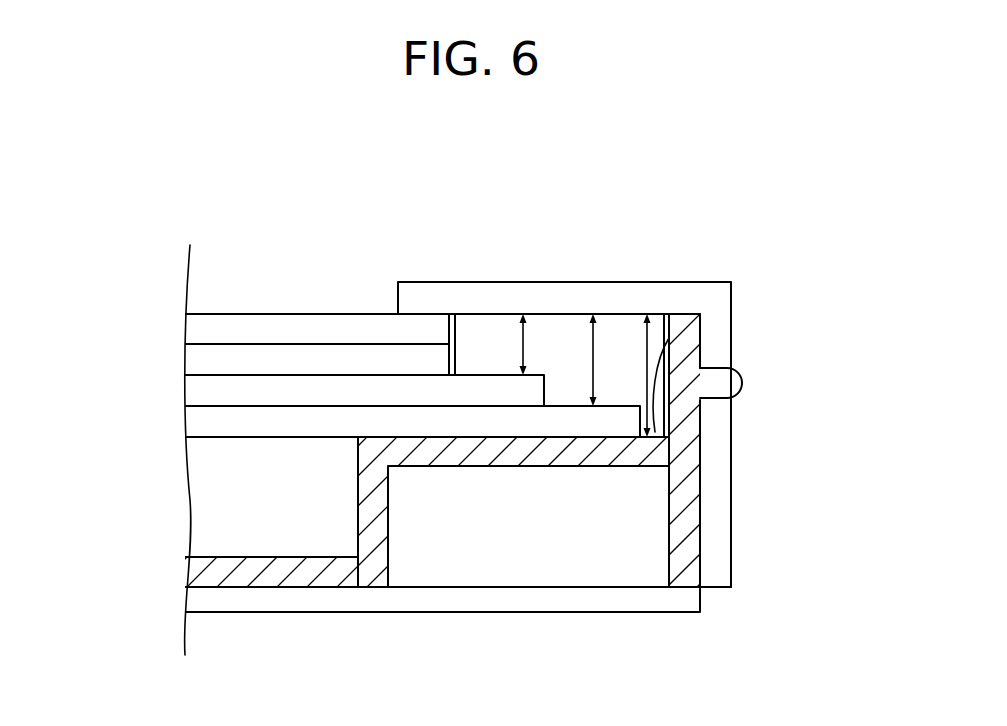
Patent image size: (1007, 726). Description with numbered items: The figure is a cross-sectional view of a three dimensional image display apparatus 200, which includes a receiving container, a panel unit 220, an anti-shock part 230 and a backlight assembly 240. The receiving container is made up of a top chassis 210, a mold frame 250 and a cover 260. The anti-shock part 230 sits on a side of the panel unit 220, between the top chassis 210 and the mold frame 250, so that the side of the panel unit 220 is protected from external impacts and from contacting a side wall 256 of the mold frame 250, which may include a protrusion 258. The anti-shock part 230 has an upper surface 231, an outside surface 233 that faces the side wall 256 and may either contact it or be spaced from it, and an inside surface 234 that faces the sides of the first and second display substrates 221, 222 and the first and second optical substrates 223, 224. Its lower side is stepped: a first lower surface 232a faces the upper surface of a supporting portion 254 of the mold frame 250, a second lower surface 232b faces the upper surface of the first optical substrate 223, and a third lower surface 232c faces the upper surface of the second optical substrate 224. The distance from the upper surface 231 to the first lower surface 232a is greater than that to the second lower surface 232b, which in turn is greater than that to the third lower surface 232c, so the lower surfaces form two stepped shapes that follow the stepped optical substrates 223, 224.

The three dimensional image display apparatus 200 is at (732, 631).
The top chassis 210 is at (717, 303).
The panel unit 220 is at (343, 375).
The first display substrate 221 is at (200, 360).
The second display substrate 222 is at (200, 328).
The first optical substrate 223 is at (371, 421).
The second optical substrate 224 is at (200, 392).
The anti-shock part 230 is at (613, 333).
The upper surface 231 is at (657, 314).
The first lower surface 232a is at (669, 338).
The second lower surface 232b is at (565, 405).
The third lower surface 232c is at (490, 375).
The outside surface 233 is at (672, 376).
The inside surface 234 is at (449, 327).
The backlight assembly 240 is at (200, 500).
The mold frame 250 is at (503, 450).
The supporting portion 254 is at (627, 452).
The side wall 256 is at (690, 422).
The protrusion 258 is at (756, 383).
The cover 260 is at (520, 602).